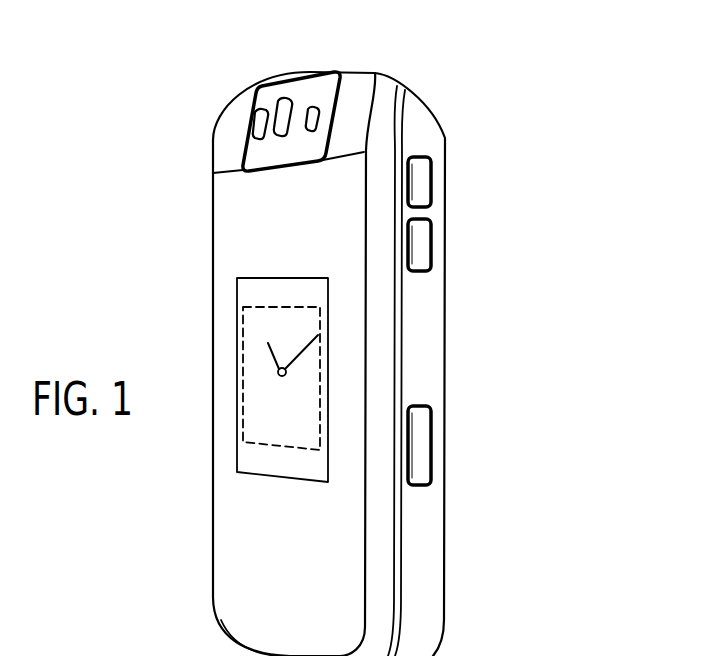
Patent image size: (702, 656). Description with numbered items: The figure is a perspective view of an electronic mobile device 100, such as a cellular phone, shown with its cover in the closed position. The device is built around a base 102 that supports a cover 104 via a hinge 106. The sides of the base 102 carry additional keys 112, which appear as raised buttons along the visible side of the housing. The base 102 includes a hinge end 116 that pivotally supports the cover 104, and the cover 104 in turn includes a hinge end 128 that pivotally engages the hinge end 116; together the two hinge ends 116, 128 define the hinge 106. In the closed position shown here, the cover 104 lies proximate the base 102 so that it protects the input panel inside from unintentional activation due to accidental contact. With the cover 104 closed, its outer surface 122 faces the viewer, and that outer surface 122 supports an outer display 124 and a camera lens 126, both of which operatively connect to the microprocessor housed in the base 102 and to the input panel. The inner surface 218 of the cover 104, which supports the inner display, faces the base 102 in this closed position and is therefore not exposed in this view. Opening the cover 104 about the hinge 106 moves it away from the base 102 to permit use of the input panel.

The electronic mobile device 100 is at (146, 278).
The base 102 is at (424, 343).
The cover 104 is at (240, 545).
The hinge 106 is at (198, 132).
The additional keys 112 is at (420, 190).
The hinge end of the base 116 is at (427, 118).
The outer surface of the cover 122 is at (232, 503).
The outer display 124 is at (247, 457).
The camera lens 126 is at (289, 91).
The hinge end of the cover 128 is at (390, 83).
The inner surface of the cover 218 is at (0, 616).